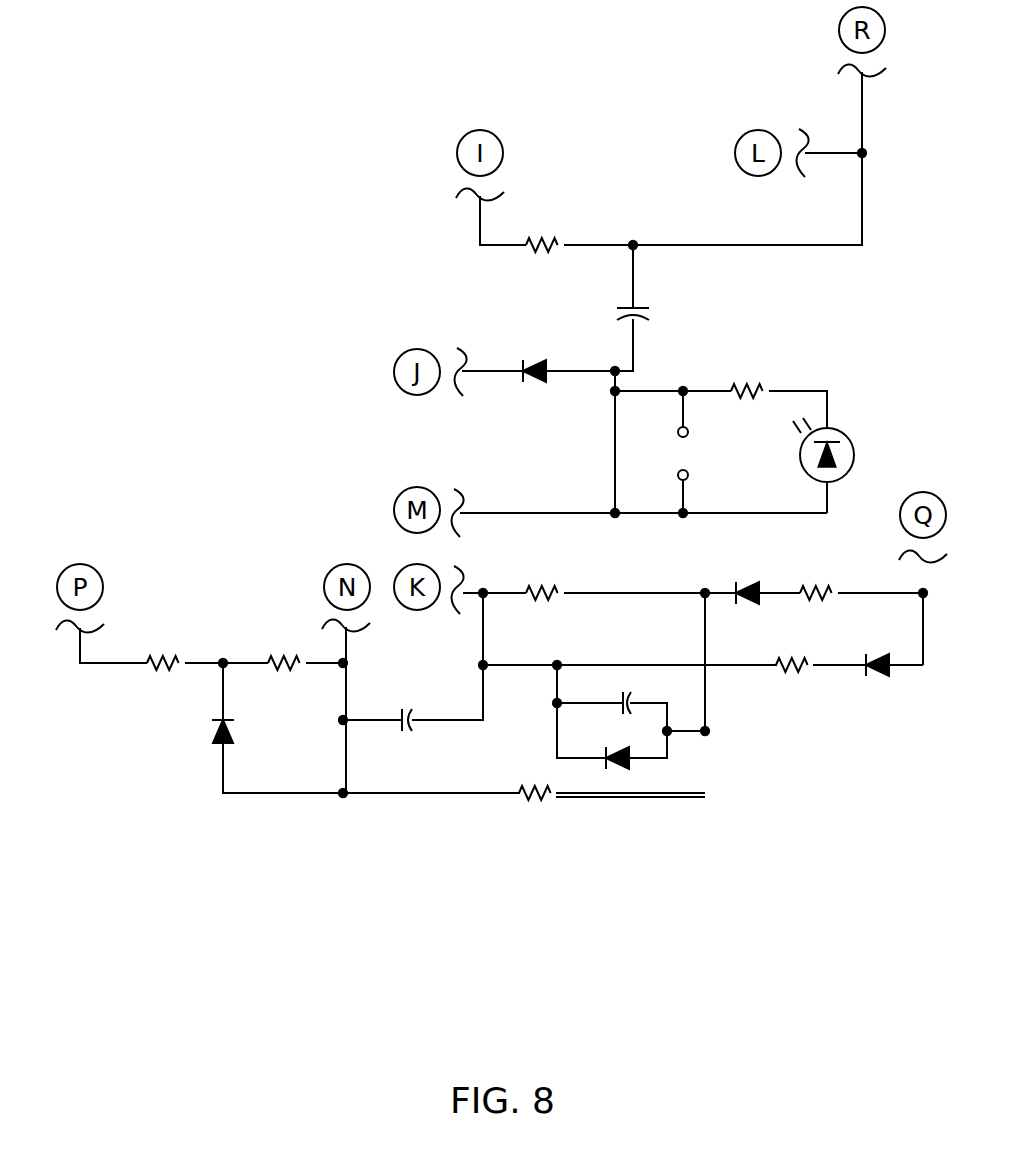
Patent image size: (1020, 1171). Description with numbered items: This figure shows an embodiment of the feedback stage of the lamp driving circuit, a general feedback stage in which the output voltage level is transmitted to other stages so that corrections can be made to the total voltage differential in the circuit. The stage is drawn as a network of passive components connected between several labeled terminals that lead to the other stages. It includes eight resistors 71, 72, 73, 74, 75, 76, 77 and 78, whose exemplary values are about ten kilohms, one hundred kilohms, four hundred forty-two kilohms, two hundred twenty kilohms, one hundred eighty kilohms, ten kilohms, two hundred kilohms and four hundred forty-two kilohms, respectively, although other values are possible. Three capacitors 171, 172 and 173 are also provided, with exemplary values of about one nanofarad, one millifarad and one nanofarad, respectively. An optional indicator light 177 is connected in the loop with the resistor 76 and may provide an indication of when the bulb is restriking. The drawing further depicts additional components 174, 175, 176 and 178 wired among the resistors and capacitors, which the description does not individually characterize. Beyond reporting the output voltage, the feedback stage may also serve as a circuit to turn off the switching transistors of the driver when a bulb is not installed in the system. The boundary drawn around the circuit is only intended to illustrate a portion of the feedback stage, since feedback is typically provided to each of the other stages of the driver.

The resistor 71 is at (173, 652).
The resistor 72 is at (283, 650).
The resistor 73 is at (530, 783).
The resistor 74 is at (545, 580).
The resistor 75 is at (562, 227).
The resistor 76 is at (743, 377).
The resistor 77 is at (788, 655).
The resistor 78 is at (830, 584).
The capacitor 171 is at (657, 294).
The capacitor 172 is at (414, 697).
The capacitor 173 is at (638, 701).
The diode 174 is at (733, 580).
The diode 175 is at (636, 773).
The diode 176 is at (549, 349).
The indicator light 177 is at (805, 475).
The switch / diode 178 is at (692, 455).